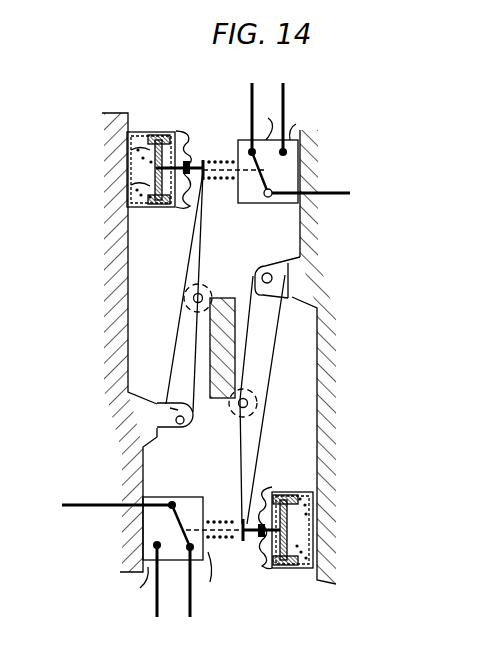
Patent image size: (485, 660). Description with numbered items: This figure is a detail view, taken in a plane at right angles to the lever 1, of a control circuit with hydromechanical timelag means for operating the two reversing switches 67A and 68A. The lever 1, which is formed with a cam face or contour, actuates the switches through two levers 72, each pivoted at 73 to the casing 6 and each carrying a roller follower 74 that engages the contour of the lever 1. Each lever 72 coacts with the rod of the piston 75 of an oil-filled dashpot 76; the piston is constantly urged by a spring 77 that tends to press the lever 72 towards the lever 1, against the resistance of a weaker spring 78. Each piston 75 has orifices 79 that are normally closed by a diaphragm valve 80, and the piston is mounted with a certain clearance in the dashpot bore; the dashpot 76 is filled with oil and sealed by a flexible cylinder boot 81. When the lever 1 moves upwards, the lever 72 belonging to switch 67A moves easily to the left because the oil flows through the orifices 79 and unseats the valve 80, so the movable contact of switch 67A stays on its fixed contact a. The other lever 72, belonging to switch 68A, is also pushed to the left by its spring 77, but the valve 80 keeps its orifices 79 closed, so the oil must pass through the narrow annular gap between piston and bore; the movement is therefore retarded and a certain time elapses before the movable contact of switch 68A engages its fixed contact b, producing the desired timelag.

The lever 1 is at (226, 332).
The casing 6 is at (126, 253).
The lever 72 is at (180, 366).
The pivot 73 is at (163, 420).
The roller follower 74 is at (197, 304).
The piston 75 is at (156, 134).
The dashpot 76 is at (162, 141).
The spring 77 is at (145, 157).
The spring 78 is at (225, 182).
The orifices 79 is at (149, 188).
The diaphragm valve 80 is at (186, 153).
The flexible cylinder boot 81 is at (190, 164).
The reversing switch 67A is at (289, 170).
The reversing switch 68A is at (150, 536).